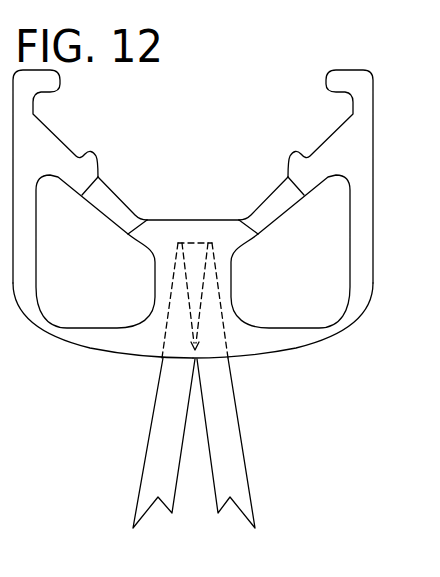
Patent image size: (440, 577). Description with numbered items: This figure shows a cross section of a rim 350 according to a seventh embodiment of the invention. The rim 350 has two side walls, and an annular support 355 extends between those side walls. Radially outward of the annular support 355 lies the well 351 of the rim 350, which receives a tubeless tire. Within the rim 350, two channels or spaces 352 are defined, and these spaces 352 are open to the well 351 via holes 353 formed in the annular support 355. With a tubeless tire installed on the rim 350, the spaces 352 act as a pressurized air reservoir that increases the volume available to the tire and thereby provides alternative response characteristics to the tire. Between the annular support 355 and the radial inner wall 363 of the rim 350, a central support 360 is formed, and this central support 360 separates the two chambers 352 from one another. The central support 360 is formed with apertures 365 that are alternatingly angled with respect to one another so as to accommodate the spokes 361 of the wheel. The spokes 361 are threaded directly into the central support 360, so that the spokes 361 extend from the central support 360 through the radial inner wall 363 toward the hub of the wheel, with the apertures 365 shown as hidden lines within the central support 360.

The rim 350 is at (348, 338).
The well 351 is at (198, 193).
The channels or spaces 352 is at (268, 317).
The holes 353 is at (268, 213).
The annular support 355 is at (80, 174).
The central support 360 is at (226, 282).
The spokes 361 is at (166, 420).
The radial inner wall 363 is at (113, 340).
The apertures 365 is at (150, 300).